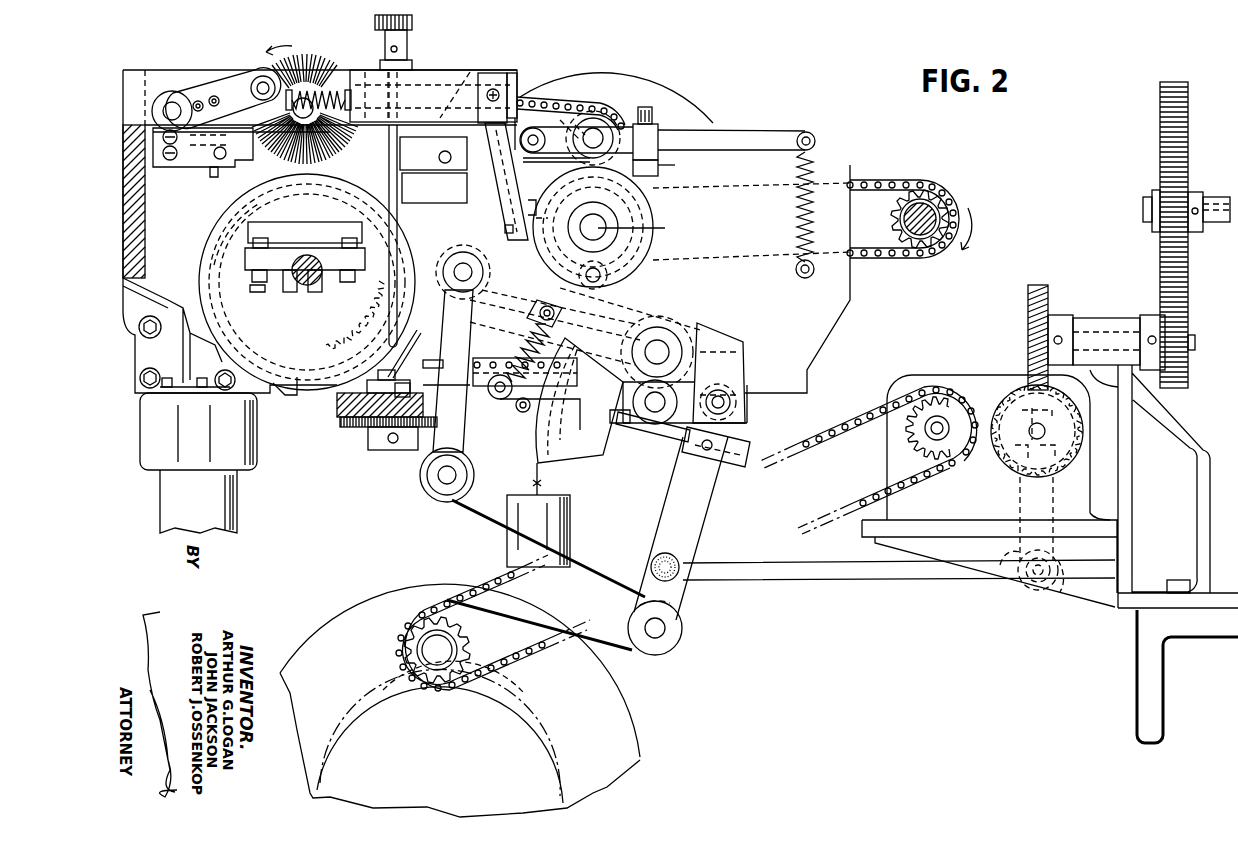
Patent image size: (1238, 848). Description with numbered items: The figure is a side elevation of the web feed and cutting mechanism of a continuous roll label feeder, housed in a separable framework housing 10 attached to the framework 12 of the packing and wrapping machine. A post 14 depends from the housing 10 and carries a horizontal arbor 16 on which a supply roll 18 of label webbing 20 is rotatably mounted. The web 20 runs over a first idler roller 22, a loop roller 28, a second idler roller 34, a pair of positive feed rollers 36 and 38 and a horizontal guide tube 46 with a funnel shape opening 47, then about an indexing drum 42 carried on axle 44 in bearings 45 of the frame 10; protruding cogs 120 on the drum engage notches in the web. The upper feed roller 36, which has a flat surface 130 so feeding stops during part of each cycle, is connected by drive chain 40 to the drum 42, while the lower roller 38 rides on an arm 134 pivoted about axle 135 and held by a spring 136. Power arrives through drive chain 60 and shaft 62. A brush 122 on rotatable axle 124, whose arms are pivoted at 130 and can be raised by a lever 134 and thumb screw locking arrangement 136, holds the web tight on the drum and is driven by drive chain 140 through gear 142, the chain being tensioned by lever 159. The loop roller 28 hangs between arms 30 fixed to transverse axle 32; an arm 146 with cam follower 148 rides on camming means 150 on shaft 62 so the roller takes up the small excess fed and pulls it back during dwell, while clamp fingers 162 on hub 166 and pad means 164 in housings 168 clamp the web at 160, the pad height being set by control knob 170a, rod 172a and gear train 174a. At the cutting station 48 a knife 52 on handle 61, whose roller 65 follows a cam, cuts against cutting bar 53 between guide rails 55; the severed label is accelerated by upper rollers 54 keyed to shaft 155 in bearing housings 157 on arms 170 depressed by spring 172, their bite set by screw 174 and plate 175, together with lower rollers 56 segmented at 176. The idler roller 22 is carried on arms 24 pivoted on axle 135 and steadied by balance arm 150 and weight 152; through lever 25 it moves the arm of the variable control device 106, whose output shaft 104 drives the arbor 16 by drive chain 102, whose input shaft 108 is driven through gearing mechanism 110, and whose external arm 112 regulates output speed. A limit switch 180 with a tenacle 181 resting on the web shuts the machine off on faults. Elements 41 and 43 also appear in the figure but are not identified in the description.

The framework housing 10 is at (130, 70).
The framework 12 is at (1163, 712).
The post 14 is at (235, 517).
The arbor 16 is at (593, 790).
The supply roll 18 is at (627, 720).
The label webbing 20 is at (600, 580).
The first idler roller 22 is at (682, 628).
The arms 24 is at (698, 533).
The lever 25 is at (768, 578).
The loop roller 28 is at (430, 497).
The arm 30 is at (468, 349).
The transverse axle 32 is at (464, 252).
The second idler roller 34 is at (748, 412).
The upper feed roller 36 is at (719, 352).
The lower feed roller 38 is at (677, 383).
The drive chain 40 is at (625, 300).
The gear 41 is at (392, 327).
The indexing drum 42 is at (293, 385).
The sprocket 43 is at (630, 347).
The axle 44 is at (318, 288).
The bearings 45 is at (299, 290).
The guide tube 46 is at (525, 402).
The funnel shape opening 47 is at (587, 458).
The cutting station 48 is at (530, 66).
The knife 52 is at (494, 182).
The cutting bar 53 is at (464, 177).
The upper rollers 54 is at (572, 118).
The guide rails 55 is at (372, 158).
The lower rollers 56 is at (640, 195).
The drive chain 60 is at (917, 257).
The handle 61 is at (534, 191).
The shaft 62 is at (642, 231).
The roller 65 is at (540, 212).
The drive chain 102 is at (830, 433).
The output shaft 104 is at (930, 430).
The variable control device 106 is at (980, 385).
The input shaft 108 is at (1052, 470).
The gearing mechanism 110 is at (1129, 283).
The external arm 112 is at (1060, 593).
The cogs 120 is at (197, 268).
The brush 122 is at (328, 62).
The rotatable axle 124 is at (300, 109).
The pivot 130 is at (180, 101).
The lever 134 is at (212, 88).
The axle 135 is at (722, 398).
The thumb screw locking arrangement 136 is at (558, 312).
The drive chain 140 is at (530, 100).
The spur gear 142 is at (588, 108).
The arm 146 is at (561, 307).
The cam follower 148 is at (637, 285).
The camming means 150 is at (668, 222).
The weight 152 is at (563, 535).
The shaft 155 is at (597, 137).
The bearing housings 157 is at (610, 118).
The lever 159 is at (447, 80).
The clamp 160 is at (385, 382).
The clamp fingers 162 is at (410, 335).
The pad means 164 is at (400, 386).
The elongated hub 166 is at (478, 305).
The housings 168 is at (337, 408).
The arms 170 is at (775, 135).
The control knob 170a is at (413, 24).
The spring 172 is at (813, 155).
The rod 172a is at (398, 213).
The screw 174 is at (653, 117).
The gear train 174a is at (362, 440).
The plate 175 is at (660, 172).
The segmented portion 176 is at (650, 181).
The limit switch 180 is at (182, 165).
The tenacle 181 is at (235, 173).